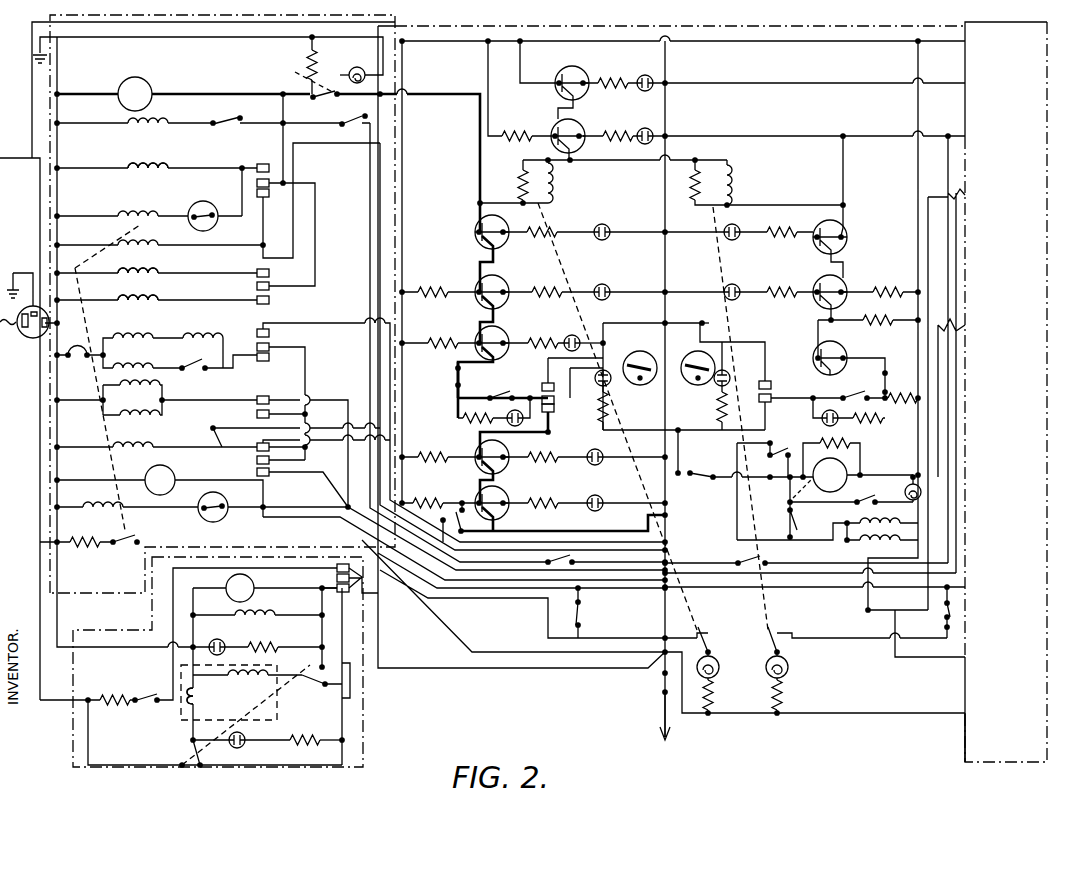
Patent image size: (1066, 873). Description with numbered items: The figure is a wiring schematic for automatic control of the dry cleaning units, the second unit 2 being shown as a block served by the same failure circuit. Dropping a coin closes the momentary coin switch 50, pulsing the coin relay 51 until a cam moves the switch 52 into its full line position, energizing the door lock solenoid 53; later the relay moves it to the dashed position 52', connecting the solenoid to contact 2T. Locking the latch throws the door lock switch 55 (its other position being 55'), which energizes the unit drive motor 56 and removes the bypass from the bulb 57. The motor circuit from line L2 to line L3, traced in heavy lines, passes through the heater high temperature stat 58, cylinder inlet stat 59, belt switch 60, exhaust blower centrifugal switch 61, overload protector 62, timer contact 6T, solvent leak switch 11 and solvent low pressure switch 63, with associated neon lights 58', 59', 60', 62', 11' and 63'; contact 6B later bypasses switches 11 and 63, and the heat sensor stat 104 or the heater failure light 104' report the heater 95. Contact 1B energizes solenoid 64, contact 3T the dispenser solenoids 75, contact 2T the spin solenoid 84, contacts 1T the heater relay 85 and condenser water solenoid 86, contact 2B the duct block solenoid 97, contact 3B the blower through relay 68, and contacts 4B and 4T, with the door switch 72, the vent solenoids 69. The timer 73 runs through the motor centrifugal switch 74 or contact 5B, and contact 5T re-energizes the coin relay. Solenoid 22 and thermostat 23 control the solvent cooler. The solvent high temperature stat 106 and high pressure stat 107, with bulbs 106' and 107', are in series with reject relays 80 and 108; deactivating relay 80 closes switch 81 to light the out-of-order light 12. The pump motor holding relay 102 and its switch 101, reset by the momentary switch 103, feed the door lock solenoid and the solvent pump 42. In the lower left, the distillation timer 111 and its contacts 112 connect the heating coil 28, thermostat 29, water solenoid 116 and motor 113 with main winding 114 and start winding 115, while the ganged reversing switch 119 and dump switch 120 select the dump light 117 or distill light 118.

The supply line L2 is at (62, 55).
The unit drive motor 56 is at (152, 88).
The door lock switch 55 is at (315, 103).
The door lock switch position 55' is at (304, 72).
The bulb 57 is at (352, 68).
The door lock solenoid 53 is at (158, 130).
The single pole double throw switch 52 is at (355, 114).
The dashed line position of switch 52' is at (321, 191).
The timer contact 1T is at (261, 163).
The condenser water solenoid 86 is at (128, 174).
The heater relay 85 is at (160, 208).
The timer contact 1B is at (268, 198).
The solenoid 64 is at (160, 250).
The timer contact 2T is at (270, 273).
The spin solenoid 84 is at (160, 278).
The timer contact 2B is at (270, 298).
The duct block solenoid 97 is at (130, 306).
The relay 68 is at (192, 338).
The timer contact 3T is at (258, 331).
The timer contact 3B is at (270, 348).
The vent solenoids 69 is at (118, 392).
The timer contact 4B is at (270, 397).
The timer contact 4T is at (257, 414).
The momentary coin switch 50 is at (210, 430).
The coin relay 51 is at (124, 452).
The timer contact 5T is at (270, 447).
The timer 73 is at (177, 476).
The timer contact 5B is at (272, 477).
The solenoid 22 is at (103, 513).
The thermostat 23 is at (225, 518).
The heater 95 is at (85, 550).
The heating coil 28 is at (112, 695).
The thermostat 29 is at (145, 712).
The distillation timer 111 is at (256, 586).
The water solenoid 116 is at (262, 613).
The distill indicator light 118 is at (217, 642).
The motor 113 is at (171, 677).
The main motor winding 114 is at (258, 681).
The start winding 115 is at (203, 699).
The motor reversing switch 119 is at (320, 671).
The dump switch 120 is at (200, 746).
The dump indicator light 117 is at (256, 746).
The cam operated switches 112 is at (357, 578).
The solvent high temperature stat 106 is at (550, 81).
The solvent high pressure stat 107 is at (536, 101).
The neon bulb 106' is at (774, 70).
The neon bulb 107' is at (774, 124).
The reject relay 80 is at (552, 185).
The reject relay 108 is at (733, 170).
The heater high temperature stat 58 is at (515, 238).
The neon light 58' is at (659, 212).
The cylinder inlet high temperature stat 59 is at (497, 301).
The neon light 59' is at (659, 277).
The belt switch 60 is at (482, 333).
The neon light 60' is at (575, 331).
The exhaust blower centrifugal switch 61 is at (455, 378).
The motor overload protector 62 is at (510, 383).
The neon light 62' is at (486, 418).
The timer contact 6B is at (545, 383).
The timer contact 6T is at (555, 404).
The heat sensor stat 104 is at (687, 375).
The heater failure light 104' is at (622, 400).
The solvent leak switch 11 is at (493, 462).
The neon light 11' is at (627, 471).
The solvent low pressure switch 63 is at (493, 506).
The neon light 63' is at (614, 487).
The door switch 72 is at (560, 555).
The drive motor centrifugal switch 74 is at (585, 612).
The supply line L3 is at (665, 708).
The switch 81 is at (722, 641).
The out-of-order light 12 is at (770, 672).
The momentary switch 103 is at (782, 440).
The pump motor holding relay switch 101 is at (784, 495).
The solvent pump 42 is at (850, 470).
The pump motor holding relay 102 is at (850, 444).
The dispenser solenoids 75 is at (862, 542).
The dry cleaning unit 2 is at (958, 735).